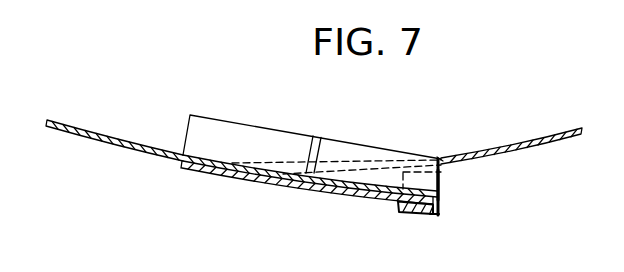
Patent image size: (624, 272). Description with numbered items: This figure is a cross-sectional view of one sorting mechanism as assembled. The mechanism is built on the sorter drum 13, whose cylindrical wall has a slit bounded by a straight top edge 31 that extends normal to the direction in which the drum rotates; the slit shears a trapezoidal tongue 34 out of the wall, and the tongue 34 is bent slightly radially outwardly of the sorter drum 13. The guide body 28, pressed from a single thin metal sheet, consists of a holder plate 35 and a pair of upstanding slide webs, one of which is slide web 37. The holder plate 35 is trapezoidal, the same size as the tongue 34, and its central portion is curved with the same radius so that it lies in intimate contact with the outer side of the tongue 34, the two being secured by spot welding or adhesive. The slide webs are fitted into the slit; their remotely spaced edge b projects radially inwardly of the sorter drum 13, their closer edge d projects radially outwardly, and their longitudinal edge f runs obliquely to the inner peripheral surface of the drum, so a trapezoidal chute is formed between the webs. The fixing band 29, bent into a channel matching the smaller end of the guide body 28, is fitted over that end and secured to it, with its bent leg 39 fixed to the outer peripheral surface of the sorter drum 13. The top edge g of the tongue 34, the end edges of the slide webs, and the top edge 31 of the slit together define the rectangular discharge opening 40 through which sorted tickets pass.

The sorter drum 13 is at (120, 142).
The guide body 28 is at (398, 136).
The slide web 37 is at (341, 142).
The remotely spaced edge b is at (186, 123).
The longitudinal edge f is at (300, 136).
The tongue 34 is at (357, 184).
The holder plate 35 is at (276, 188).
The leg 39 is at (441, 170).
The discharge opening 40 is at (441, 185).
The closer edge d is at (441, 193).
The top edge of tongue g is at (438, 212).
The fixing band 29 is at (412, 218).
The top edge of slit 31 is at (441, 158).